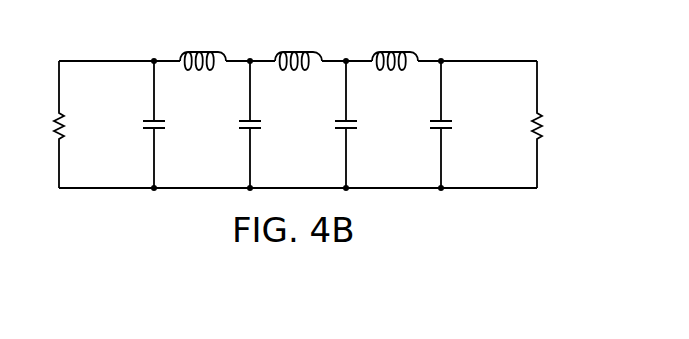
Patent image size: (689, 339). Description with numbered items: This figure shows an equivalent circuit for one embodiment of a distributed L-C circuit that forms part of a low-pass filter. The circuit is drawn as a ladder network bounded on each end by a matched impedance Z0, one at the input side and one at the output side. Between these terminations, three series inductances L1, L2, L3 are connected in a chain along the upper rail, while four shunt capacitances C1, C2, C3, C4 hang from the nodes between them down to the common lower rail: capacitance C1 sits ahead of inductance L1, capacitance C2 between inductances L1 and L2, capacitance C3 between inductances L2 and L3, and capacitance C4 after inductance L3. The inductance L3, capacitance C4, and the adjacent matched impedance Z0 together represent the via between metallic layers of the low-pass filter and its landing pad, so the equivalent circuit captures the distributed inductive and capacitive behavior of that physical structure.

The matched impedance Z0 is at (285, 124).
The inductance L1 is at (203, 43).
The inductance L2 is at (298, 43).
The inductance L3 is at (395, 43).
The capacitance C1 is at (138, 124).
The capacitance C2 is at (232, 124).
The capacitance C3 is at (328, 124).
The capacitance C4 is at (423, 124).